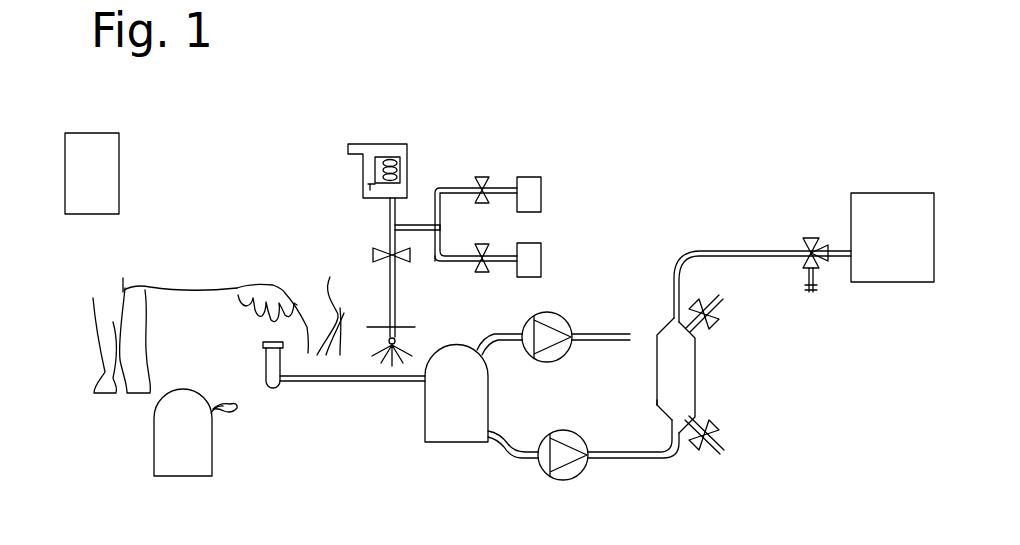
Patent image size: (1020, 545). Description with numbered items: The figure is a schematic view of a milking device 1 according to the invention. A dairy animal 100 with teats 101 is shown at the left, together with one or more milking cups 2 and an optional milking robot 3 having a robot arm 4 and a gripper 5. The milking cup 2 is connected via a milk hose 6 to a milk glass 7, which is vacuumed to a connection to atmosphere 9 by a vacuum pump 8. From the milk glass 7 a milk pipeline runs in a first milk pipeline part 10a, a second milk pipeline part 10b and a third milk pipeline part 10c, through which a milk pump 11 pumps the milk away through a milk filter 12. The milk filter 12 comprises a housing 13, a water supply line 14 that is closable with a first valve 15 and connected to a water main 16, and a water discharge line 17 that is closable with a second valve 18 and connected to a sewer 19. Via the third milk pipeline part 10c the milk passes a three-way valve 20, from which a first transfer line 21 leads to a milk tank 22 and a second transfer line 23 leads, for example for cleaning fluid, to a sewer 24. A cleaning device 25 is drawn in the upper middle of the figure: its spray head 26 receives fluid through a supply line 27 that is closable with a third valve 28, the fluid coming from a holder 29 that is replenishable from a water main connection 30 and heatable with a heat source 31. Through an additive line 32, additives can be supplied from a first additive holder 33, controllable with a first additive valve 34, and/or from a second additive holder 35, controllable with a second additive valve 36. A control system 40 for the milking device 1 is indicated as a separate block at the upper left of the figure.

The milking device 1 is at (797, 469).
The milking cup 2 is at (266, 365).
The milking robot 3 is at (176, 452).
The robot arm 4 is at (213, 408).
The gripper 5 is at (226, 409).
The milk hose 6 is at (357, 381).
The milk glass 7 is at (442, 410).
The vacuum pump 8 is at (543, 345).
The connection to atmosphere 9 is at (595, 335).
The first milk pipeline part 10a is at (517, 462).
The second milk pipeline part 10b is at (623, 458).
The third milk pipeline part 10c is at (678, 273).
The milk pump 11 is at (565, 470).
The milk filter 12 is at (705, 372).
The housing 13 is at (672, 404).
The water supply line 14 is at (697, 330).
The first valve 15 is at (718, 313).
The water main 16 is at (708, 303).
The water discharge line 17 is at (706, 420).
The second valve 18 is at (718, 426).
The sewer 19 is at (722, 455).
The three-way valve 20 is at (806, 241).
The first transfer line 21 is at (828, 252).
The milk tank 22 is at (897, 258).
The second transfer line 23 is at (806, 267).
The sewer 24 is at (815, 288).
The cleaning device 25 is at (537, 157).
The spray head 26 is at (400, 340).
The supply line 27 is at (395, 290).
The third valve 28 is at (374, 253).
The holder 29 is at (363, 176).
The water main connection 30 is at (352, 150).
The heat source 31 is at (368, 184).
The additive line 32 is at (418, 225).
The first additive holder 33 is at (530, 188).
The first additive valve 34 is at (482, 176).
The second additive holder 35 is at (530, 252).
The second additive valve 36 is at (482, 277).
The control system 40 is at (108, 157).
The dairy animal 100 is at (222, 268).
The teats 101 is at (253, 293).